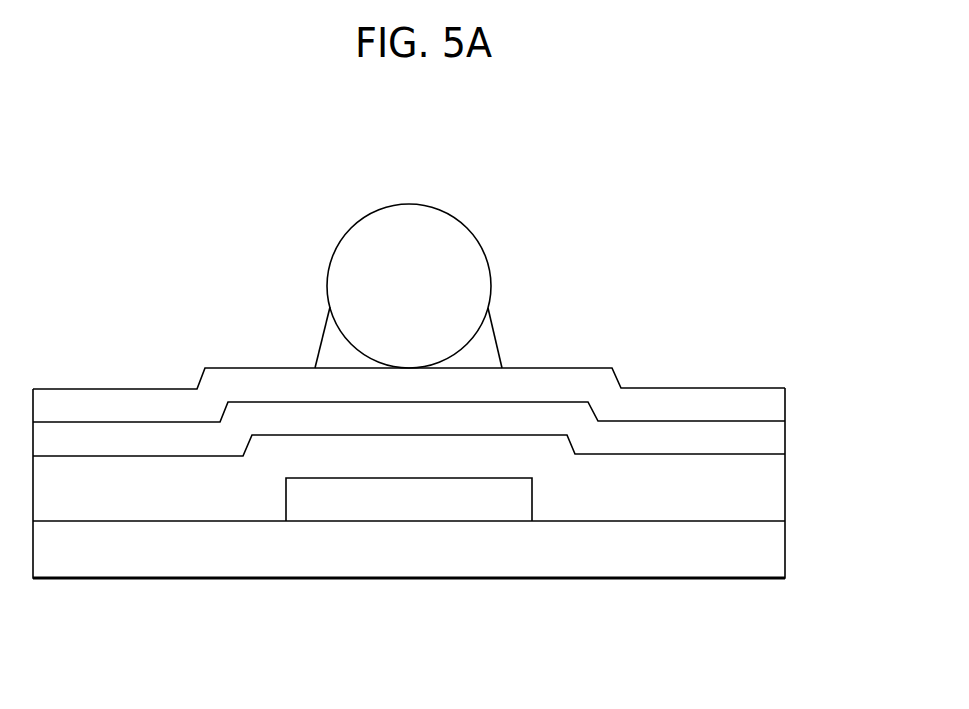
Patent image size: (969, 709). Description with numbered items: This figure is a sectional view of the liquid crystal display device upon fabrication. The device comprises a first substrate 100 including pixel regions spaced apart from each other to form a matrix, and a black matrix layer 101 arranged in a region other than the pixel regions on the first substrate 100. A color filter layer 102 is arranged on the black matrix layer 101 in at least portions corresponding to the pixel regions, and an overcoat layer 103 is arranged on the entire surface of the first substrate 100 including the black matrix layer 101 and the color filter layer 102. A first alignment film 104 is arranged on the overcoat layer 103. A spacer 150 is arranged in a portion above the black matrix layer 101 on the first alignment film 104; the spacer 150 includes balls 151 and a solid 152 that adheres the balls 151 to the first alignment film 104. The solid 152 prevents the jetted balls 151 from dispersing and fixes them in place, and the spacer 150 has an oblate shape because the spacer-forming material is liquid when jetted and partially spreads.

The first substrate 100 is at (772, 543).
The black matrix layer 101 is at (413, 507).
The color filter layer 102 is at (772, 488).
The overcoat layer 103 is at (772, 443).
The first alignment film 104 is at (772, 397).
The spacer 150 is at (517, 286).
The balls 151 is at (470, 265).
The solid 152 is at (467, 337).